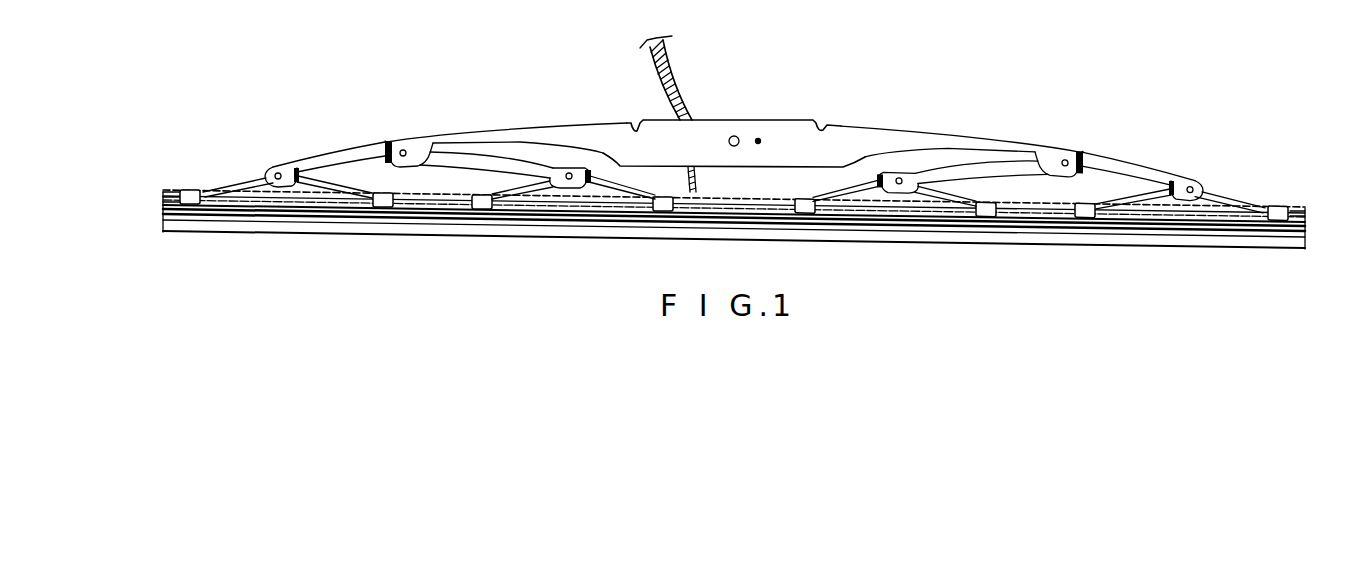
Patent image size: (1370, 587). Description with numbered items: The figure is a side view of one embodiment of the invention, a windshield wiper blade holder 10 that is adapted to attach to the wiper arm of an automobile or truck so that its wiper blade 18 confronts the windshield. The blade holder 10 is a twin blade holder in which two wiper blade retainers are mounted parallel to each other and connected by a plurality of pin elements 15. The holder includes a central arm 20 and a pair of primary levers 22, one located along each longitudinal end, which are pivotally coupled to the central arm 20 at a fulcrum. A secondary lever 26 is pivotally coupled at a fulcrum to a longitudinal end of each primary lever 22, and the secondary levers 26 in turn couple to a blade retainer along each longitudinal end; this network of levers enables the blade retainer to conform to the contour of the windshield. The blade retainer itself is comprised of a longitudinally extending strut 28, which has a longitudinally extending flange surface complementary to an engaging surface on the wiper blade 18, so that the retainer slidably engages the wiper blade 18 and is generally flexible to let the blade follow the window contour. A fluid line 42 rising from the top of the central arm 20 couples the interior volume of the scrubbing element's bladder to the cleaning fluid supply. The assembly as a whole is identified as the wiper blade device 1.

The wiper blade 1 is at (1294, 200).
The windshield wiper blade holder 10 is at (741, 120).
The pin element 15 is at (280, 172).
The wiper blade 18 is at (1280, 245).
The central arm 20 is at (500, 130).
The primary lever 22 is at (323, 152).
The secondary lever 26 is at (208, 180).
The strut 28 is at (160, 189).
The fluid line 42 is at (694, 94).